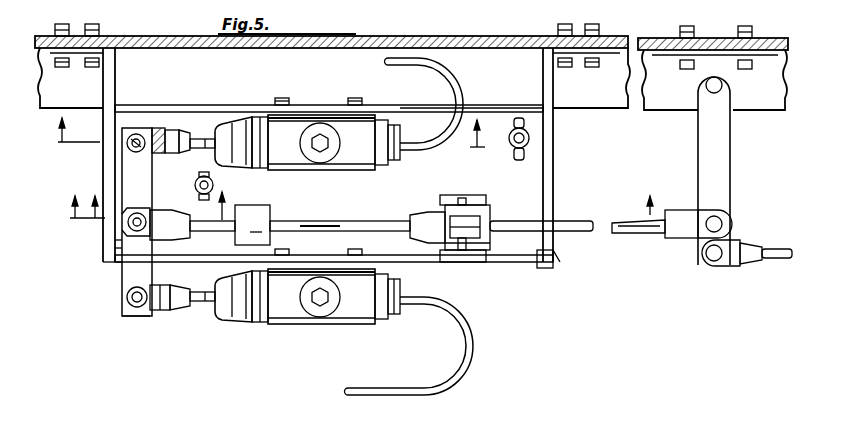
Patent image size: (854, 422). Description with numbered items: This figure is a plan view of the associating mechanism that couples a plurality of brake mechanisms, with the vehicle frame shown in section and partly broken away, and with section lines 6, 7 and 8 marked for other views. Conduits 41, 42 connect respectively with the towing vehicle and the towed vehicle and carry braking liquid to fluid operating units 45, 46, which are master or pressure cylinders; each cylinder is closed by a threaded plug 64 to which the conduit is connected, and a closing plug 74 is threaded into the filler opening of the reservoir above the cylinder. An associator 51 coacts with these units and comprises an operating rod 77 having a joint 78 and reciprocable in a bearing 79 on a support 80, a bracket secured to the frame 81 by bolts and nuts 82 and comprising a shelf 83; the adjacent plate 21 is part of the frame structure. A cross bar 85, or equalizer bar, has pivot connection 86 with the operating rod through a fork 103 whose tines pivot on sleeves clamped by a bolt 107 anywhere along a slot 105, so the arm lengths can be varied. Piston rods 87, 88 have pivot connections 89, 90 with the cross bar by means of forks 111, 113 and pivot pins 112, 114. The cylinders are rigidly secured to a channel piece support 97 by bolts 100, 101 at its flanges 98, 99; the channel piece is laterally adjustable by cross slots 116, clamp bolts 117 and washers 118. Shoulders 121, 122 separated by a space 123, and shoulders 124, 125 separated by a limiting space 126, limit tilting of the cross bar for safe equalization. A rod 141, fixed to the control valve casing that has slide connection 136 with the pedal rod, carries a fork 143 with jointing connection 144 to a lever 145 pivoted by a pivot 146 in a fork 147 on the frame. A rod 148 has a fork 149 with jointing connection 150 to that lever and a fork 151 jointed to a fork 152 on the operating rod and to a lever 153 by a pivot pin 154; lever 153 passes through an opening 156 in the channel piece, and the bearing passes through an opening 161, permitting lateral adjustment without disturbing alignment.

The mounting plate 21 is at (744, 32).
The conduit 41 is at (472, 365).
The conduit 42 is at (458, 92).
The fluid operating unit 45 is at (365, 325).
The fluid operating unit 46 is at (352, 182).
The associator 51 is at (100, 273).
The plug 64 is at (392, 125).
The closing plug 74 is at (320, 300).
The operating rod 77 is at (375, 220).
The joint 78 is at (480, 200).
The bearing 79 is at (262, 218).
The support 80 is at (560, 262).
The frame 81 is at (470, 47).
The bolts and nuts 82 is at (600, 32).
The shelf 83 is at (553, 205).
The cross bar 85 is at (125, 316).
The pivot connection 86 is at (130, 228).
The piston rod 87 is at (206, 301).
The piston rod 88 is at (240, 143).
The pivot connection 89 is at (126, 300).
The pivot connection 90 is at (128, 147).
The support 97 is at (248, 105).
The flange 98 is at (535, 270).
The flange 99 is at (497, 105).
The bolts 100 is at (348, 250).
The bolts 101 is at (348, 99).
The fork 103 is at (200, 234).
The slot 105 is at (122, 244).
The bolt 107 is at (120, 222).
The fork 111 is at (185, 310).
The pivot pin 112 is at (150, 300).
The fork 113 is at (178, 135).
The pivot pin 114 is at (134, 158).
The cross slots 116 is at (524, 124).
The clamp bolts 117 is at (529, 140).
The washers 118 is at (524, 152).
The shoulder 121 is at (196, 186).
The shoulder 122 is at (196, 192).
The space 123 is at (175, 240).
The shoulder 124 is at (158, 130).
The shoulder 125 is at (158, 128).
The limiting space 126 is at (166, 130).
The slide connection 136 is at (165, 310).
The rod 141 is at (785, 238).
The fork 143 is at (750, 266).
The jointing connection 144 is at (712, 268).
The lever 145 is at (732, 158).
The pivot 146 is at (722, 87).
The fork 147 is at (705, 78).
The rod 148 is at (625, 236).
The fork 149 is at (680, 238).
The jointing connection 150 is at (730, 222).
The fork 151 is at (498, 262).
The fork 152 is at (430, 212).
The lever 153 is at (462, 250).
The pivot pin 154 is at (462, 195).
The opening 156 is at (470, 200).
The opening 161 is at (250, 205).
The section line 6 is at (356, 198).
The section line 7 is at (275, 129).
The section line 8 is at (159, 197).